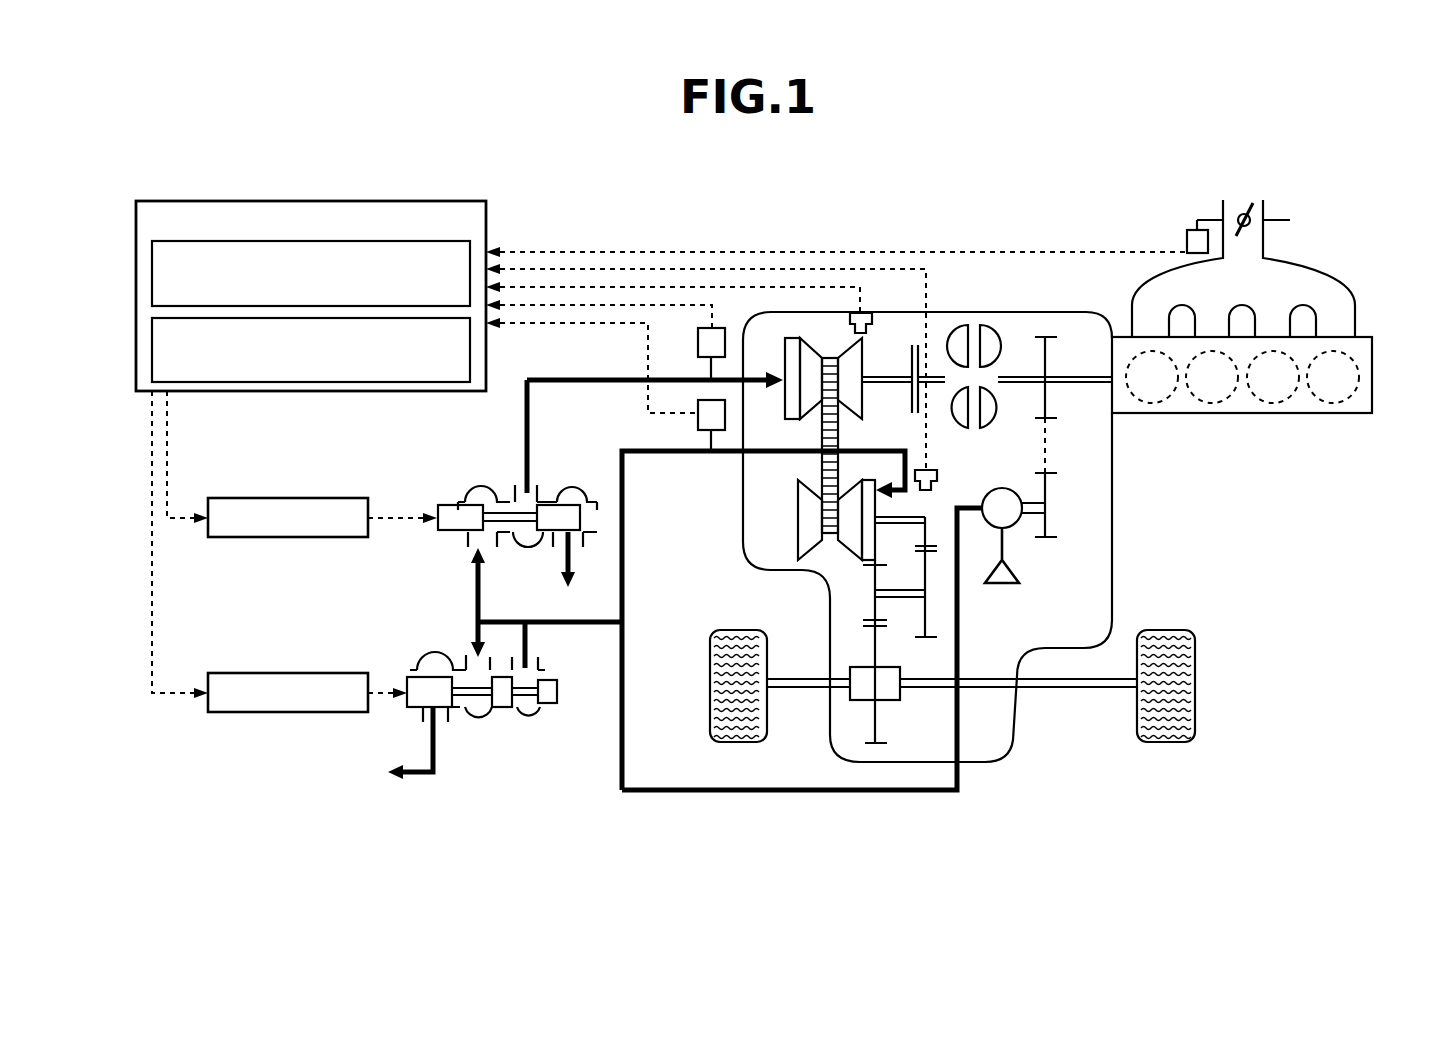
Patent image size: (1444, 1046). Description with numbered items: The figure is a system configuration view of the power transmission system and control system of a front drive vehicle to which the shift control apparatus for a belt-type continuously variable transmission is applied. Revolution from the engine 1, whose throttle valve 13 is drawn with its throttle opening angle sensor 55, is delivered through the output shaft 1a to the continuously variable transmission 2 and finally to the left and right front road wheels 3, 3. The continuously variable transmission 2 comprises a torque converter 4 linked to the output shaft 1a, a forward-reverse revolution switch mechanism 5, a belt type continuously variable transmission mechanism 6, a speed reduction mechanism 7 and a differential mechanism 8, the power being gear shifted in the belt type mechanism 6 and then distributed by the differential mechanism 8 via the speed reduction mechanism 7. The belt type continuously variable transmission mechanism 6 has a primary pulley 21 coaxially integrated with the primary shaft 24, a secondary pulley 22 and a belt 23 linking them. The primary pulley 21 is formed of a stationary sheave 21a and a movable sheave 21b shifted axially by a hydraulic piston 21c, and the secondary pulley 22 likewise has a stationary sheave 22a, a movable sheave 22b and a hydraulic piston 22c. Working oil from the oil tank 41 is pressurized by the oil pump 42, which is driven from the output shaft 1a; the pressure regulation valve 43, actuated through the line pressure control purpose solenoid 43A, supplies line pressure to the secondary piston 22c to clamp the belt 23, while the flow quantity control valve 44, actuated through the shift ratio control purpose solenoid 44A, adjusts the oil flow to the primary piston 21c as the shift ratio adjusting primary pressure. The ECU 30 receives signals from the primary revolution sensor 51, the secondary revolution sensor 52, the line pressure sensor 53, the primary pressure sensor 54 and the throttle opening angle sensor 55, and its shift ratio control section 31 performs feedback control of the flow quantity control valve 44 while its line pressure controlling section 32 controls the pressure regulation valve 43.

The engine 1 is at (1372, 350).
The output shaft 1a is at (1083, 375).
The continuously variable transmission 2 is at (1112, 483).
The front road wheels 3 is at (740, 742).
The torque converter 4 is at (1000, 335).
The forward-reverse revolution switch mechanism 5 is at (924, 345).
The belt type continuously variable transmission mechanism 6 is at (760, 481).
The speed reduction mechanism 7 is at (908, 646).
The differential mechanism 8 is at (890, 700).
The throttle valve 13 is at (1263, 219).
The primary pulley 21 is at (826, 311).
The stationary sheave of primary pulley 21a is at (866, 400).
The movable sheave of primary pulley 21b is at (810, 340).
The hydraulic piston of primary pulley 21c is at (783, 408).
The secondary pulley 22 is at (767, 555).
The stationary sheave of secondary pulley 22a is at (797, 543).
The movable sheave of secondary pulley 22b is at (852, 547).
The hydraulic piston of secondary pulley 22c is at (878, 547).
The belt 23 is at (822, 460).
The primary shaft 24 is at (888, 375).
The ECU 30 is at (212, 201).
The shift ratio control section 31 is at (152, 265).
The line pressure controlling section 32 is at (152, 340).
The oil tank 41 is at (1018, 578).
The oil pump 42 is at (1015, 523).
The pressure regulation valve 43 is at (432, 660).
The line pressure control purpose solenoid 43A is at (258, 673).
The flow quantity control valve 44 is at (476, 490).
The shift ratio control purpose solenoid 44A is at (258, 498).
The primary revolution sensor 51 is at (852, 313).
The secondary revolution sensor 52 is at (937, 478).
The line pressure sensor 53 is at (698, 420).
The primary pressure sensor 54 is at (698, 345).
The throttle opening angle sensor 55 is at (1187, 240).